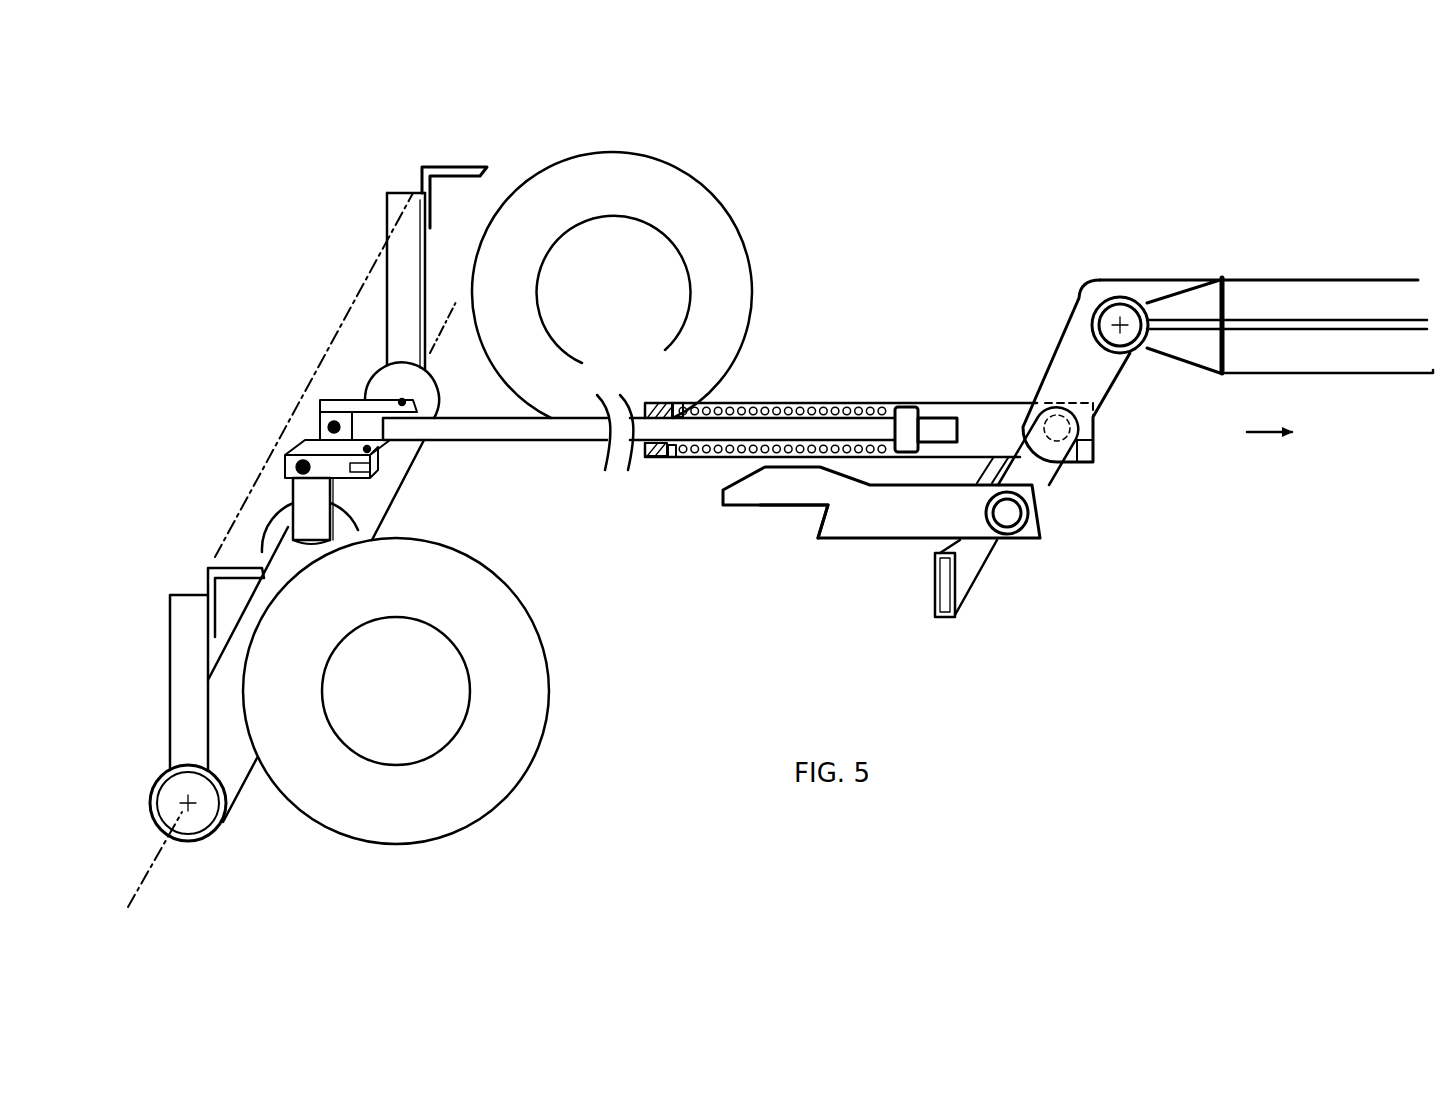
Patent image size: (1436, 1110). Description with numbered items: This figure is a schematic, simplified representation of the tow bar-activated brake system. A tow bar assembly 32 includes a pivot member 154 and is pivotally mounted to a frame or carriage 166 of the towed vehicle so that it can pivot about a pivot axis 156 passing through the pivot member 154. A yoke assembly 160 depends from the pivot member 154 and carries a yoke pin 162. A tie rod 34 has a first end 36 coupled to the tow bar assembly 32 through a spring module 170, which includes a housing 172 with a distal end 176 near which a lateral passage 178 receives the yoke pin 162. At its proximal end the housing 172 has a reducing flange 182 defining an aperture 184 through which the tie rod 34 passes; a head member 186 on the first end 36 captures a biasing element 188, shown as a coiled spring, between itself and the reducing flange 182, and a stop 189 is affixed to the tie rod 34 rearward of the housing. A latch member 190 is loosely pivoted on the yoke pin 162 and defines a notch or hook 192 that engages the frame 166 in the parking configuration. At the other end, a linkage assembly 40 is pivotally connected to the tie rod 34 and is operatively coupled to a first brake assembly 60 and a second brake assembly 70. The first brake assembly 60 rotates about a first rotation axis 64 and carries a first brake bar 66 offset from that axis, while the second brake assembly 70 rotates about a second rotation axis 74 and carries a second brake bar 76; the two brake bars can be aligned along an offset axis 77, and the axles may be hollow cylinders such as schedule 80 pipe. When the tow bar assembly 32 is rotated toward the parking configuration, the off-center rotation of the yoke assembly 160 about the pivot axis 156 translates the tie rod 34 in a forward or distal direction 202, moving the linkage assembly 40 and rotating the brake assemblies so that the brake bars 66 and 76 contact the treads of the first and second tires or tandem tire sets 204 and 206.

The tow bar assembly 32 is at (1329, 262).
The tie rod 34 is at (483, 447).
The first end 36 is at (945, 421).
The linkage assembly 40 is at (323, 415).
The first brake assembly 60 is at (250, 796).
The first rotation axis 64 is at (148, 868).
The first brake bar 66 is at (205, 570).
The second brake assembly 70 is at (360, 381).
The second rotation axis 74 is at (448, 297).
The second brake bar 76 is at (445, 160).
The offset axis 77 is at (360, 273).
The hub 80 is at (266, 511).
The pivot member 154 is at (1115, 306).
The pivot axis 156 is at (1140, 303).
The yoke assembly 160 is at (1117, 404).
The yoke pin 162 is at (1014, 521).
The frame or carriage 166 is at (960, 575).
The spring module 170 is at (829, 397).
The housing 172 is at (703, 458).
The distal end 176 is at (1095, 455).
The lateral passage 178 is at (1068, 455).
The reducing flange 182 is at (665, 405).
The aperture 184 is at (684, 407).
The head member 186 is at (905, 408).
The biasing element 188 is at (758, 405).
The stop 189 is at (660, 455).
The latch member 190 is at (850, 515).
The notch or hook 192 is at (822, 505).
The forward or distal direction 202 is at (1262, 433).
The first tire or tandem tire set 204 is at (550, 740).
The second tire or tandem tire set 206 is at (700, 183).